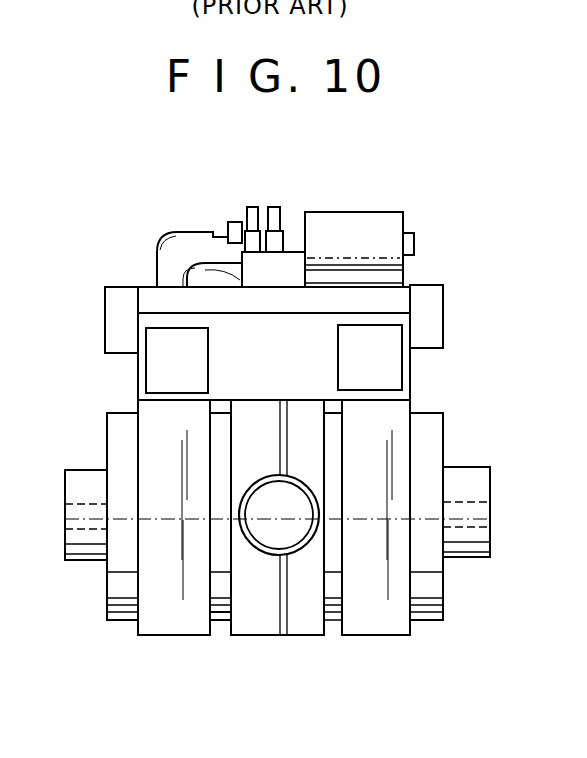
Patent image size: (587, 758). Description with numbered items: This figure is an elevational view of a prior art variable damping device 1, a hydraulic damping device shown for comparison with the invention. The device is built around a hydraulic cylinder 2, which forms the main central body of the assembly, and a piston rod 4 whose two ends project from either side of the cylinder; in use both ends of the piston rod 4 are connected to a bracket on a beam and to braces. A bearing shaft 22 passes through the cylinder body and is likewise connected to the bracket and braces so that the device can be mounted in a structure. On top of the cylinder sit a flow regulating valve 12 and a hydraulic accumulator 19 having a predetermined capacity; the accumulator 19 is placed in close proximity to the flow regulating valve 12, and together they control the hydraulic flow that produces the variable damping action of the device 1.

The variable damping device 1 is at (132, 256).
The hydraulic cylinder 2 is at (217, 623).
The piston rod 4 is at (470, 476).
The flow regulating valve 12 is at (292, 262).
The hydraulic accumulator 19 is at (377, 226).
The bearing shaft 22 is at (298, 552).